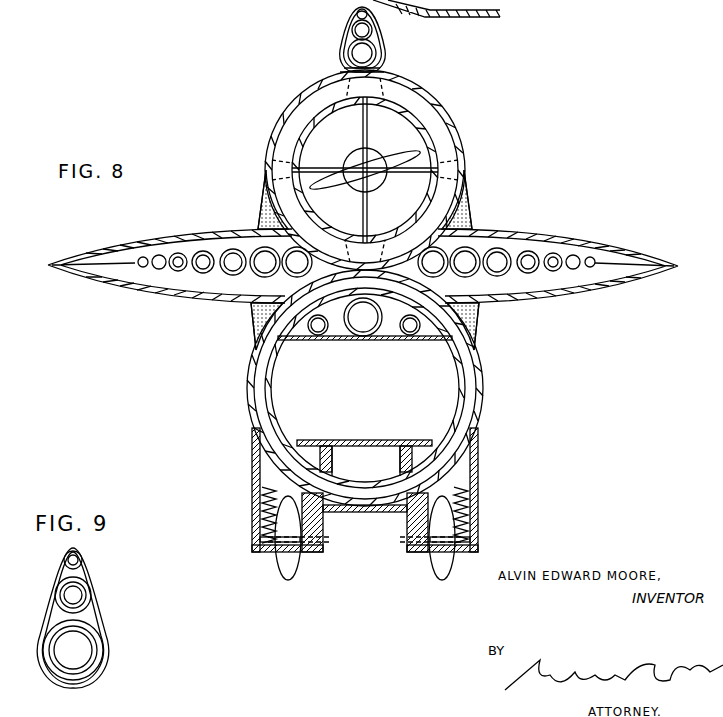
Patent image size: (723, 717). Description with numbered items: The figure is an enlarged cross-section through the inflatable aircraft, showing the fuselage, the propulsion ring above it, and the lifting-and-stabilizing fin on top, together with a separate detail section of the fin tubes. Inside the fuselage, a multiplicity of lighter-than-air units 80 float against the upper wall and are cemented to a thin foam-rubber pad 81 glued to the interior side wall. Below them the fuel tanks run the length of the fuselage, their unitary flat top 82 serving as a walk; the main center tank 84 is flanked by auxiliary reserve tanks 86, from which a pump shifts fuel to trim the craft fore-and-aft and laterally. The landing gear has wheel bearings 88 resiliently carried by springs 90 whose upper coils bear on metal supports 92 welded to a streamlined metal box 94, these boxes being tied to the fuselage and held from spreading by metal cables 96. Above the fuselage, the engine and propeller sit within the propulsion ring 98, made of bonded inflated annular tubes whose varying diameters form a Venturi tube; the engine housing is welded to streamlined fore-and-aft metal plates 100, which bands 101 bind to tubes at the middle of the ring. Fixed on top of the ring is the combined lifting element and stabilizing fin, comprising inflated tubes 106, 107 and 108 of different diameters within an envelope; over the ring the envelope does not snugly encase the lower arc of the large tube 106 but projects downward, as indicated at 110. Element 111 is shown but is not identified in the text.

In FIG. 8, the lighter-than-air units 80 is at (373, 325).
In FIG. 8, the foam-rubber pad 81 is at (388, 341).
In FIG. 8, the unitary flat top of fuel tanks 82 is at (360, 440).
In FIG. 8, the main center tank 84 is at (376, 466).
In FIG. 8, the auxiliary reserve tanks 86 is at (312, 439).
In FIG. 8, the wheel bearings 88 is at (256, 540).
In FIG. 8, the springs 90 is at (262, 501).
In FIG. 8, the metal supports 92 is at (250, 478).
In FIG. 8, the streamlined metal box 94 is at (252, 451).
In FIG. 8, the metal cables 96 is at (330, 512).
In FIG. 8, the propulsion ring 98 is at (401, 200).
In FIG. 8, the fore-and-aft metal plates 100 is at (361, 138).
In FIG. 8, the bands 101 is at (388, 79).
In FIG. 8, the large inflated tube 106 is at (345, 62).
In FIG. 9, the large inflated tube 106 is at (108, 645).
In FIG. 8, the inflated tube 107 is at (348, 37).
In FIG. 9, the inflated tube 107 is at (100, 594).
In FIG. 8, the inflated tube 108 is at (352, 12).
In FIG. 9, the inflated tube 108 is at (84, 556).
In FIG. 8, the downward projection of envelope 110 is at (386, 56).
In FIG. 8, the bracket fairing 111 is at (380, 24).